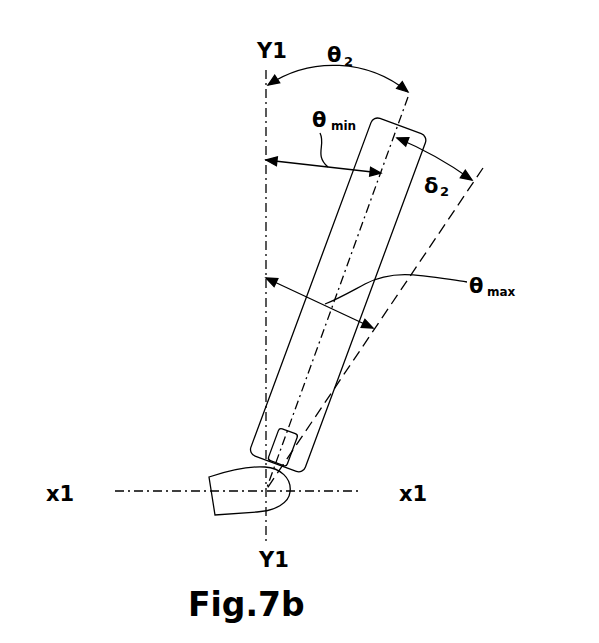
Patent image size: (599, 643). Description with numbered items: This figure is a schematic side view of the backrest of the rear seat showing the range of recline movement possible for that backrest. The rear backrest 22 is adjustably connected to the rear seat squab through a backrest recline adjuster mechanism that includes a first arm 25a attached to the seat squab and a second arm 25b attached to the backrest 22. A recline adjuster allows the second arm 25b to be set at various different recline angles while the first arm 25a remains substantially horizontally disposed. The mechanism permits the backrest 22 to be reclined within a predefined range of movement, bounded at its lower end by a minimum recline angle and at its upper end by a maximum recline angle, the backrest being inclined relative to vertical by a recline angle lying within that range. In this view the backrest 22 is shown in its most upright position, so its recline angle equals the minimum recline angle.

The rear backrest 22 is at (334, 223).
The first arm 25a is at (217, 515).
The second arm 25b is at (275, 437).